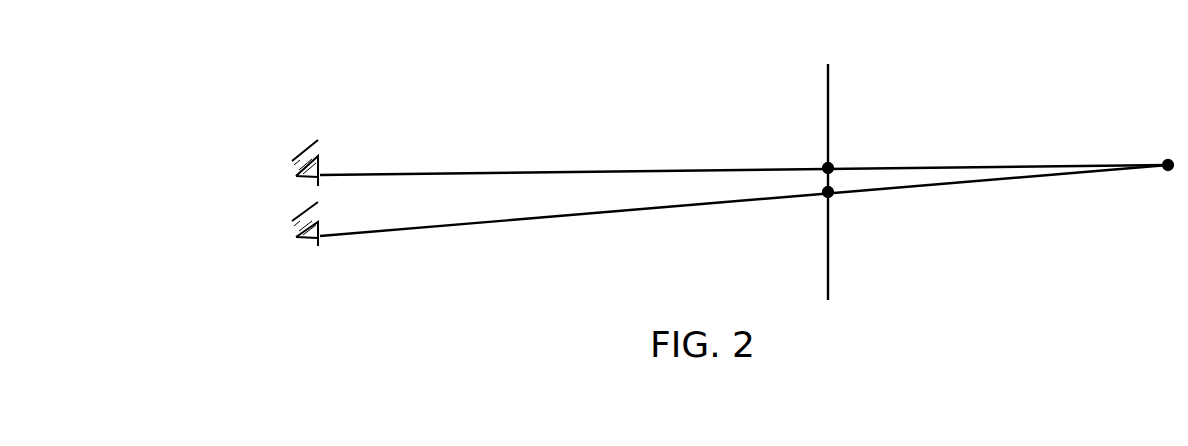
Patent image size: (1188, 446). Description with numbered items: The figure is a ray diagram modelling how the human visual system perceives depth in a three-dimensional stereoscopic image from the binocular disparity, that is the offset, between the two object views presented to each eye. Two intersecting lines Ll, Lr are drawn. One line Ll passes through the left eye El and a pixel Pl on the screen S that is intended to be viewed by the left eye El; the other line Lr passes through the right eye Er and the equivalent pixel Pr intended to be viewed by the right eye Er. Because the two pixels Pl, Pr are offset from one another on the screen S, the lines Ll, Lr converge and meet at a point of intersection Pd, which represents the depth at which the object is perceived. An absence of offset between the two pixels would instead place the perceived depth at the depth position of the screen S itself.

The left eye El is at (316, 132).
The right eye Er is at (314, 246).
The line through left eye Ll is at (486, 172).
The line through right eye Lr is at (493, 222).
The screen S is at (829, 277).
The left-eye pixel Pl is at (823, 165).
The right-eye pixel Pr is at (830, 197).
The point of intersection Pd is at (1168, 159).